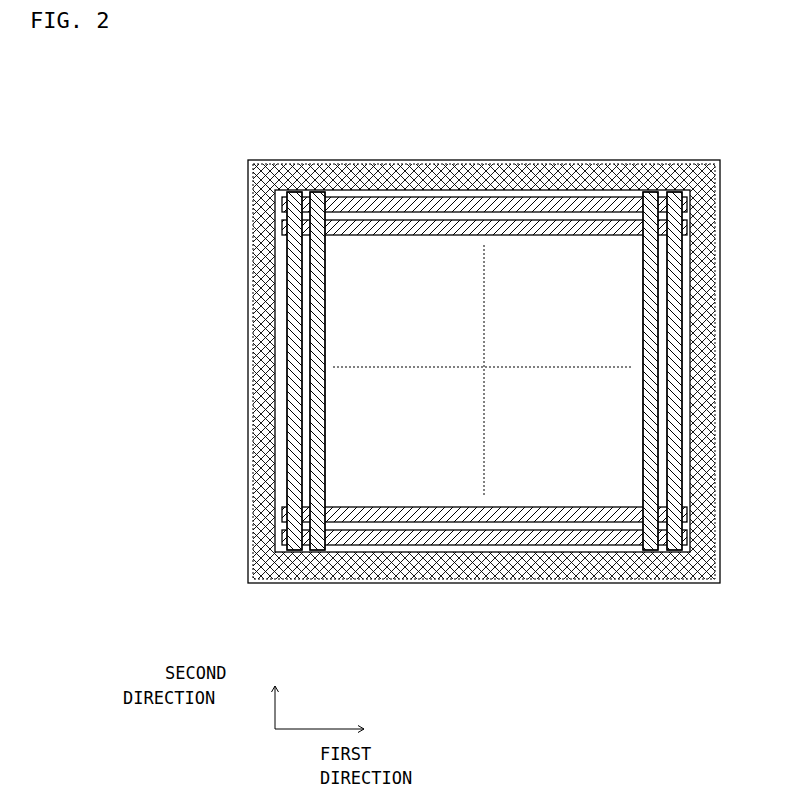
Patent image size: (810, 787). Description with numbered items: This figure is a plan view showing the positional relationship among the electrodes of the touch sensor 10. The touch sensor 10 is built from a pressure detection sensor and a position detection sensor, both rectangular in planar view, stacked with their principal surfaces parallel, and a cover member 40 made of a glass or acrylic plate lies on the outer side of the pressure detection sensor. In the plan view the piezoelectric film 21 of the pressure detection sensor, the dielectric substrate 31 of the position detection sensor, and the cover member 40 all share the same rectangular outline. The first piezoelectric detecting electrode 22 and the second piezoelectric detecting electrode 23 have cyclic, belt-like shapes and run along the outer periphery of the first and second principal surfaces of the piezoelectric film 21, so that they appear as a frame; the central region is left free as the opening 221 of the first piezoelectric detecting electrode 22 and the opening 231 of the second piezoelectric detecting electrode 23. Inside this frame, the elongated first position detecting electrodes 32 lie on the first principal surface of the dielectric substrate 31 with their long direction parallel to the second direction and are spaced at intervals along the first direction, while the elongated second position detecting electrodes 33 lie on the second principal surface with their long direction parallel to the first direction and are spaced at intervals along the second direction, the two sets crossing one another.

The touch sensor 10 is at (502, 329).
The piezoelectric film 21 is at (500, 357).
The dielectric substrate 31 is at (500, 357).
The cover member 40 is at (500, 357).
The first piezoelectric detecting electrode 22 is at (502, 355).
The second piezoelectric detecting electrode 23 is at (719, 160).
The opening 221 is at (484, 355).
The opening 231 is at (443, 181).
The first position detecting electrode 32 is at (317, 190).
The second position detecting electrode 33 is at (683, 227).